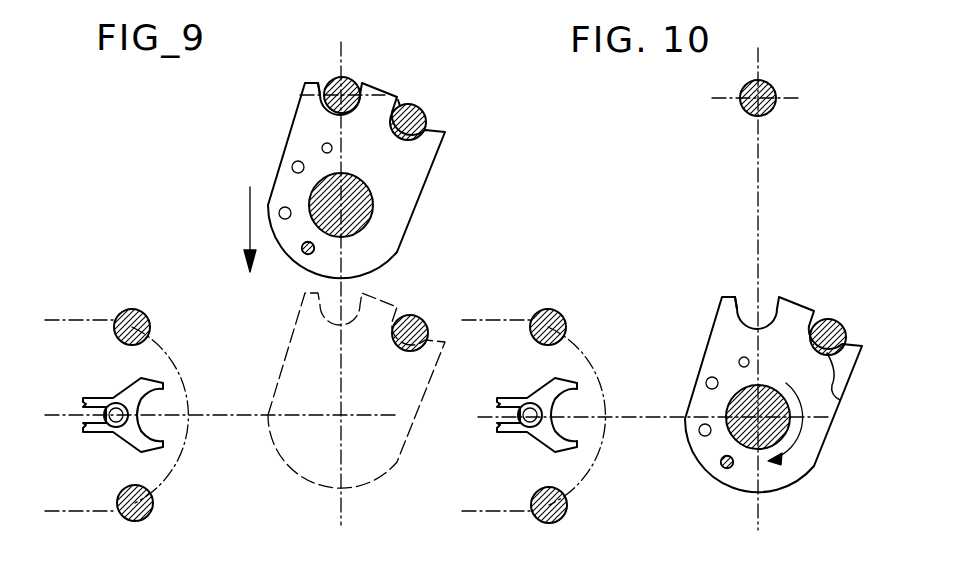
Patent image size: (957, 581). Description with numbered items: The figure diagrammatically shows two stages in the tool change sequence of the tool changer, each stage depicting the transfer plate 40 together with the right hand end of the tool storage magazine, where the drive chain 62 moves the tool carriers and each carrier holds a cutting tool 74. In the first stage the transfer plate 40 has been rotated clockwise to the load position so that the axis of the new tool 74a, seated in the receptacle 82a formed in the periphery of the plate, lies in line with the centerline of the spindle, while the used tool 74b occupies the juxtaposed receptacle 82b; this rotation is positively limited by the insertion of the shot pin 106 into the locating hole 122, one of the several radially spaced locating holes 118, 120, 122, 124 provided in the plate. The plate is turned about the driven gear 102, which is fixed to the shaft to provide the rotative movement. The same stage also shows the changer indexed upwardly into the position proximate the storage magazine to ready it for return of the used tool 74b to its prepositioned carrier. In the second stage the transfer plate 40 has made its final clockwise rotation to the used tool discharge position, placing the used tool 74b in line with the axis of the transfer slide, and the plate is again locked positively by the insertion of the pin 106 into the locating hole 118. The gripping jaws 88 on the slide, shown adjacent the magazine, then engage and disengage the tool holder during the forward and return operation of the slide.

In FIG. 9, the transfer plate 40 is at (412, 172).
In FIG. 10, the transfer plate 40 is at (718, 327).
In FIG. 9, the drive chain 62 is at (88, 300).
In FIG. 10, the drive chain 62 is at (510, 318).
In FIG. 9, the cutting tool 74 is at (134, 322).
In FIG. 10, the cutting tool 74 is at (550, 322).
In FIG. 9, the new tool 74a is at (348, 88).
In FIG. 10, the new tool 74a is at (768, 92).
In FIG. 9, the old tool 74b is at (412, 118).
In FIG. 10, the old tool 74b is at (830, 335).
In FIG. 9, the receptacle 82a is at (322, 106).
In FIG. 10, the receptacle 82a is at (752, 292).
In FIG. 9, the receptacle 82b is at (448, 140).
In FIG. 10, the receptacle 82b is at (838, 395).
In FIG. 9, the jaws 88 is at (130, 390).
In FIG. 10, the jaws 88 is at (556, 390).
In FIG. 9, the driven gear 102 is at (360, 208).
In FIG. 10, the driven gear 102 is at (782, 430).
In FIG. 9, the shot pin 106 is at (305, 255).
In FIG. 10, the shot pin 106 is at (725, 468).
In FIG. 9, the locating hole 118 is at (323, 146).
In FIG. 10, the locating hole 118 is at (740, 360).
In FIG. 9, the locating hole 120 is at (293, 165).
In FIG. 10, the locating hole 120 is at (707, 381).
In FIG. 9, the locating hole 122 is at (280, 212).
In FIG. 10, the locating hole 122 is at (700, 432).
In FIG. 9, the locating hole 124 is at (304, 252).
In FIG. 10, the locating hole 124 is at (722, 466).